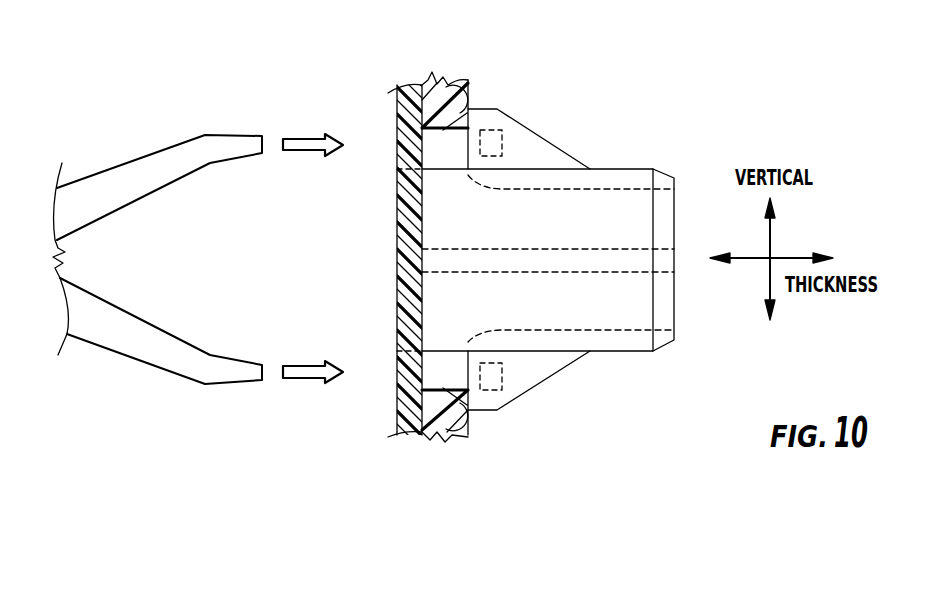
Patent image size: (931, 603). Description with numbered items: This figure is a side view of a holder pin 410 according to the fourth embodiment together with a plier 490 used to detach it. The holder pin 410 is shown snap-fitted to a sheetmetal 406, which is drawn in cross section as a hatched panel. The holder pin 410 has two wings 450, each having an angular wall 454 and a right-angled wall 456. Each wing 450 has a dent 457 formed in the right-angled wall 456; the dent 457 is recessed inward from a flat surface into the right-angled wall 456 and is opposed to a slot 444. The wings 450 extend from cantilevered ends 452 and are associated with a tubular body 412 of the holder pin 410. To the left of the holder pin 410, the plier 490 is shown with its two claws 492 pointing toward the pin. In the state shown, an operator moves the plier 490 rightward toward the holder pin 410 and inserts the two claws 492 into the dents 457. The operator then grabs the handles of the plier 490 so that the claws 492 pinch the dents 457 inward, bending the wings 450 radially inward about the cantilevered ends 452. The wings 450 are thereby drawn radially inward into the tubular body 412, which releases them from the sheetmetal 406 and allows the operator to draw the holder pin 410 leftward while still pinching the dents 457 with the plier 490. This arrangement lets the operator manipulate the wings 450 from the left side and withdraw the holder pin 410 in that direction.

The plier 490 is at (157, 226).
The claws 492 is at (242, 141).
The holder pin 410 is at (520, 233).
The slot 444 is at (397, 368).
The right-angled wall 456 is at (444, 100).
The dent 457 is at (480, 140).
The angular wall 454 is at (545, 133).
The cantilevered ends 452 is at (607, 183).
The tubular body 412 is at (660, 340).
The wings 450 is at (576, 250).
The sheetmetal 406 is at (447, 372).